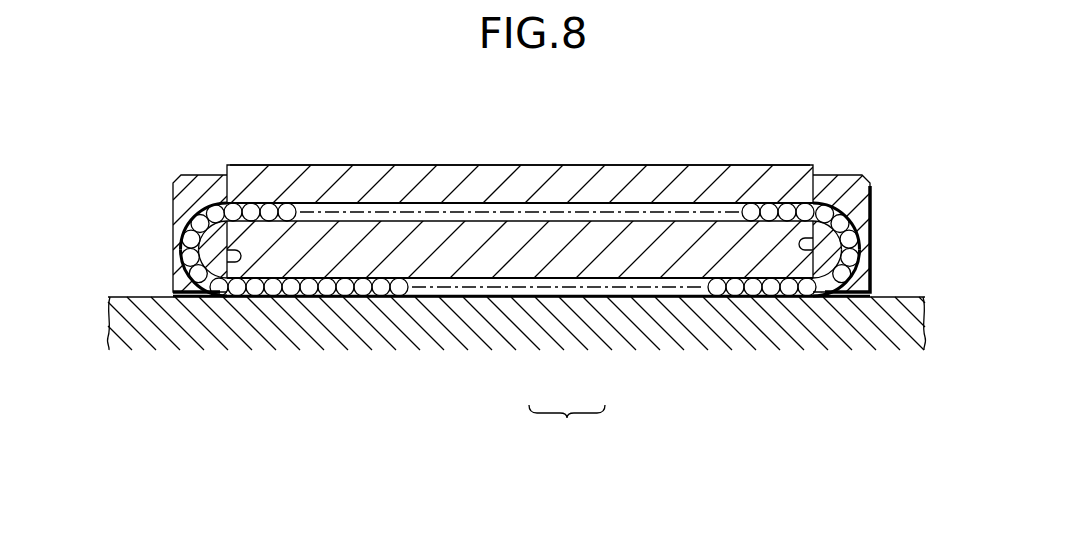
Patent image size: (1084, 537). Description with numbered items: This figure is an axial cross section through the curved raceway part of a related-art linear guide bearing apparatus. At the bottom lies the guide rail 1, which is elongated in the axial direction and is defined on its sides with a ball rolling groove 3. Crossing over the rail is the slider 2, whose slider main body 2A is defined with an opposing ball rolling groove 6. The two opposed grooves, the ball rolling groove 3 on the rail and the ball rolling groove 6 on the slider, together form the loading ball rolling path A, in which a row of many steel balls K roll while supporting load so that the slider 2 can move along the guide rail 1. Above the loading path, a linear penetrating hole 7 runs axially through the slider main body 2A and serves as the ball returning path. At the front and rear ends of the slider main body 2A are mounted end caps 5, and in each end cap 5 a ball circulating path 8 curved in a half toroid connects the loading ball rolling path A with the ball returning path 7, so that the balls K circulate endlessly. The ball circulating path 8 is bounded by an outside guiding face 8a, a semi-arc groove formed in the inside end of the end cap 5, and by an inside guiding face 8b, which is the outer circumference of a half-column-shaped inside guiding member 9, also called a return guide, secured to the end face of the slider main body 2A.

The guide rail 1 is at (907, 297).
The slider 2 is at (466, 150).
The slider main body 2A is at (541, 165).
The ball rolling groove 3 is at (531, 296).
The end cap 5 is at (206, 178).
The ball rolling groove 6 is at (590, 278).
The linear penetrating hole 7 is at (653, 203).
The ball circulating path 8 is at (519, 249).
The outside guiding face 8a is at (183, 224).
The inside guiding face 8b is at (521, 273).
The inside guiding member 9 is at (237, 262).
The balls K is at (768, 205).
The loading ball rolling path A is at (567, 424).